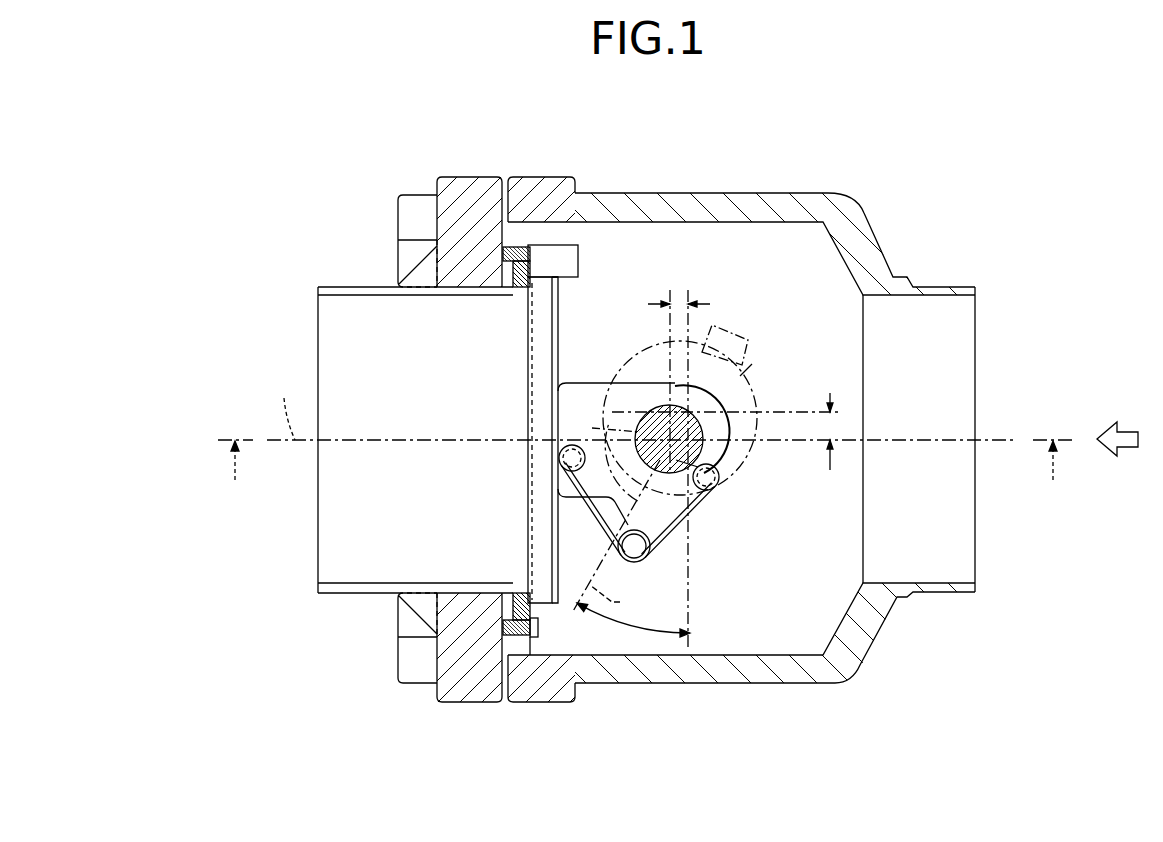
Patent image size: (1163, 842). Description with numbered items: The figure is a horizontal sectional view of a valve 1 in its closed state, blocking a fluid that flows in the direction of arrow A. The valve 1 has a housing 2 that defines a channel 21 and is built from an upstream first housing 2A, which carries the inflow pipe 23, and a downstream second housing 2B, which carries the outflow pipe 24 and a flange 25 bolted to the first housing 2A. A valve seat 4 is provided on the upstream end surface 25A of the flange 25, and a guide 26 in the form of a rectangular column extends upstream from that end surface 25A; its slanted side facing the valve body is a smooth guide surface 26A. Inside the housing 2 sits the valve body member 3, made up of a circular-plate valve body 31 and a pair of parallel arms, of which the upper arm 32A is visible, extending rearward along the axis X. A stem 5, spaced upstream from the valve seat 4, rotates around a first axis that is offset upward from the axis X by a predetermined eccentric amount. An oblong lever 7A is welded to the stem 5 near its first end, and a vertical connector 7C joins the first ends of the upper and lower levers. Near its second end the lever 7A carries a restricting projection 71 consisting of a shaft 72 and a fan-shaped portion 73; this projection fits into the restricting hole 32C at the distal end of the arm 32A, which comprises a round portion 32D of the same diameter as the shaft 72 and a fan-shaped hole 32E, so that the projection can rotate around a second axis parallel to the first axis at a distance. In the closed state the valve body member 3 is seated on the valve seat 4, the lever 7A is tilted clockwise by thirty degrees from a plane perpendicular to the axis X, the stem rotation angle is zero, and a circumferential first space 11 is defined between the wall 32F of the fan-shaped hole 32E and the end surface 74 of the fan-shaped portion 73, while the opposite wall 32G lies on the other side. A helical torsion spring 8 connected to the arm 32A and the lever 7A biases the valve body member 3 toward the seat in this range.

The valve 1 is at (708, 114).
The housing 2 is at (560, 760).
The first housing 2A is at (541, 703).
The second housing 2B is at (487, 703).
The valve body member 3 is at (620, 293).
The valve seat 4 is at (522, 606).
The stem 5 is at (718, 431).
The lever 7A is at (754, 386).
The connector 7C is at (748, 352).
The helical torsion spring 8 is at (678, 540).
The first space 11 is at (660, 520).
The channel 21 is at (812, 624).
The inflow pipe 23 is at (950, 287).
The outflow pipe 24 is at (352, 287).
The flange 25 is at (463, 177).
The end surface 25A is at (531, 237).
The guide 26 is at (572, 258).
The guide surface 26A is at (556, 280).
The valve body 31 is at (546, 302).
The arm 32A is at (573, 392).
The restricting hole 32C is at (795, 482).
The round portion 32D is at (720, 465).
The fan-shaped hole 32E is at (713, 497).
The wall 32F is at (688, 522).
The wall 32G is at (675, 385).
The restricting projection 71 is at (629, 400).
The shaft 72 is at (729, 447).
The fan-shaped portion 73 is at (632, 494).
The end surface 74 is at (660, 490).